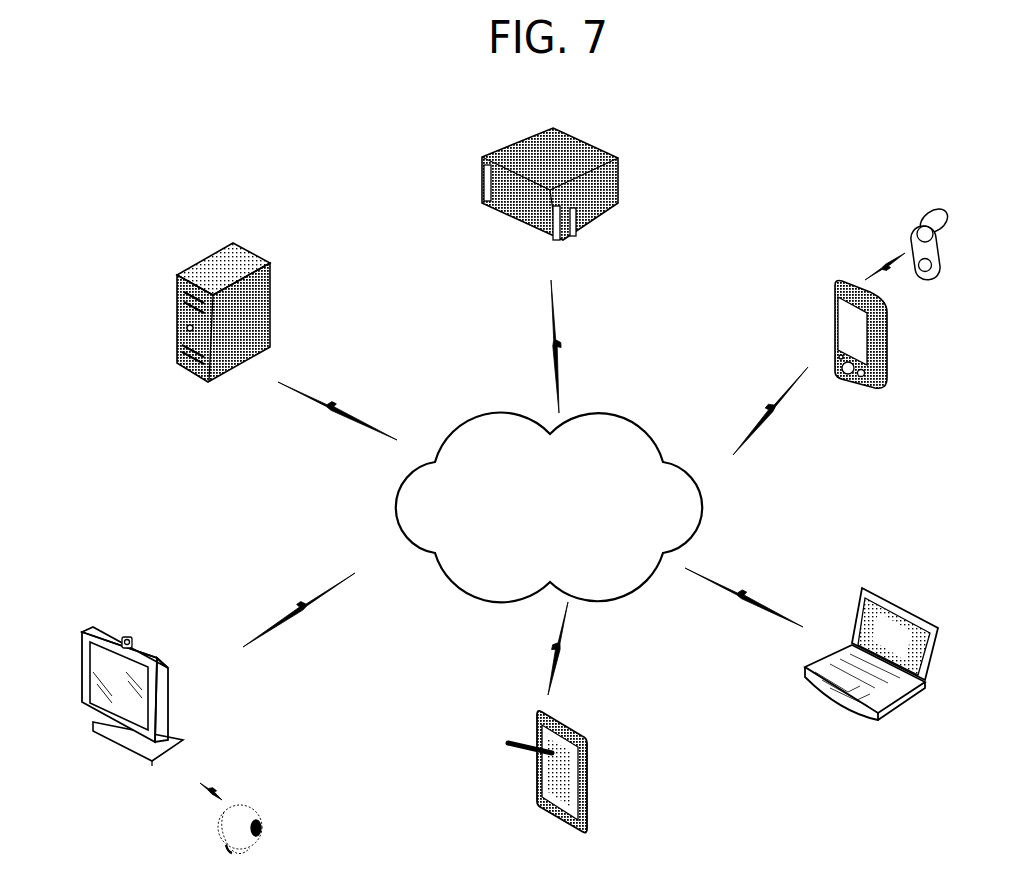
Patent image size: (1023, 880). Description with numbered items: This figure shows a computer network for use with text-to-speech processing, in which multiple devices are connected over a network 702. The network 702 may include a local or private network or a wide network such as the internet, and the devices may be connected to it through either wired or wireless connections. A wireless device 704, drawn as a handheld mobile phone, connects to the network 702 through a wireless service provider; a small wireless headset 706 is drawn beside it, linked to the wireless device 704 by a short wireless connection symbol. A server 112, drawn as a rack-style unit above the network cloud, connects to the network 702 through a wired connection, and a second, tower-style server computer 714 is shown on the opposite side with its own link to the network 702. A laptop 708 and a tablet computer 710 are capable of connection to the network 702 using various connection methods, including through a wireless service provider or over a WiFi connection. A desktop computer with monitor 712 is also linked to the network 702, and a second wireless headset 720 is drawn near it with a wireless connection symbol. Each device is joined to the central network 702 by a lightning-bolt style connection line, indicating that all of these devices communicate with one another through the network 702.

The server 112 is at (617, 160).
The network 702 is at (600, 413).
The wireless device 704 is at (887, 320).
The wireless headset 706 is at (930, 212).
The laptop 708 is at (878, 590).
The tablet computer 710 is at (583, 735).
The desktop computer 712 is at (157, 660).
The server computer 714 is at (260, 260).
The wireless headset 720 is at (253, 803).